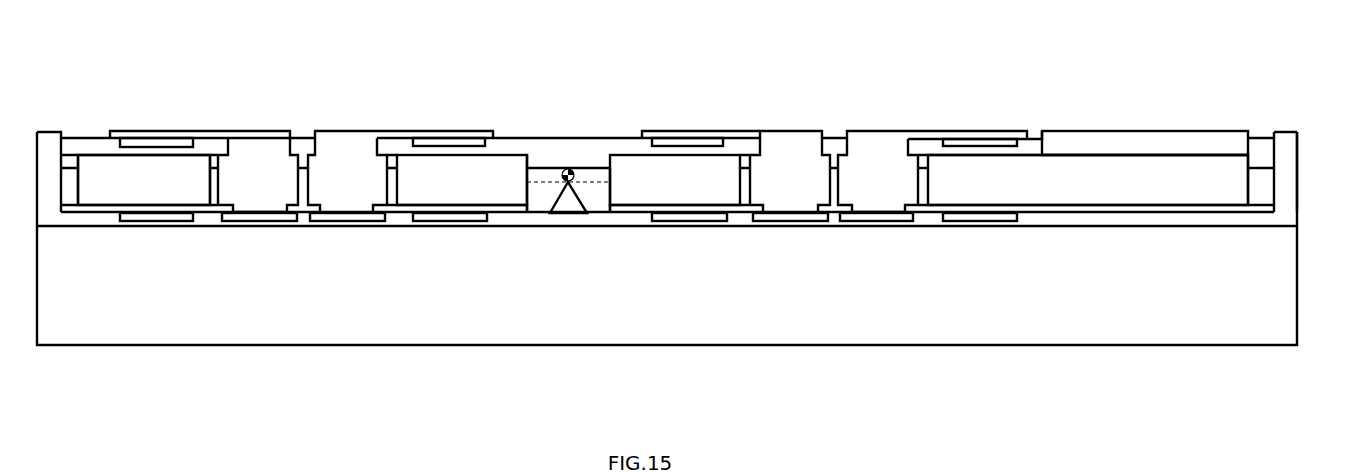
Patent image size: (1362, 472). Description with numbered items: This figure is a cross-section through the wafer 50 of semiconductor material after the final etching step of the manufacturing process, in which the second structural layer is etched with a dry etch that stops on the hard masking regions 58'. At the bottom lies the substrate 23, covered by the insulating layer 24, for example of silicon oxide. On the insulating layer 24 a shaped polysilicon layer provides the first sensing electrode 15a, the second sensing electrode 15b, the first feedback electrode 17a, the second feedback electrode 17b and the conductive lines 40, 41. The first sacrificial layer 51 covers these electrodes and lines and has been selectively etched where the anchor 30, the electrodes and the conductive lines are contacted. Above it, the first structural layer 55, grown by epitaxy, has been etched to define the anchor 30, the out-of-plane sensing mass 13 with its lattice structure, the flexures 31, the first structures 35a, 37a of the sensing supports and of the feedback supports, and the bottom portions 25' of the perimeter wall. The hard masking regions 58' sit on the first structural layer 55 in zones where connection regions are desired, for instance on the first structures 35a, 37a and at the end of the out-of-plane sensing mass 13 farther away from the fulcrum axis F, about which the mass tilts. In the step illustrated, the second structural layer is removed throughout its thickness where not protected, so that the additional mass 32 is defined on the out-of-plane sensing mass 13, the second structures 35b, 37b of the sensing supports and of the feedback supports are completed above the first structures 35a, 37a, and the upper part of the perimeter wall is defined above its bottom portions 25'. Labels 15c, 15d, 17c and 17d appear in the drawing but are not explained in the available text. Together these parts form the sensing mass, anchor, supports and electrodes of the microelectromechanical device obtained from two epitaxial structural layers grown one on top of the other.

The out-of-plane sensing mass 13 is at (112, 188).
The first sensing electrode 15a is at (163, 222).
The second sensing electrode 15b is at (968, 225).
The first package 15c is at (155, 138).
The second package 15d is at (968, 140).
The first feedback electrode 17a is at (428, 222).
The second feedback electrode 17b is at (693, 225).
The first device portion 17c is at (457, 170).
The second device portion 17d is at (690, 140).
The substrate 23 is at (487, 318).
The insulating layer 24 is at (1155, 222).
The bottom portions of the perimeter wall 25' is at (667, 264).
The anchor 30 is at (566, 218).
The flexures 31 is at (542, 178).
The additional mass 32 is at (1190, 142).
The first structures of the sensing supports 35a is at (257, 177).
The second structures of the sensing supports 35b is at (193, 133).
The first structures of the feedback supports 37a is at (350, 180).
The second structures of the feedback supports 37b is at (415, 135).
The conductive line 40 is at (275, 222).
The conductive line 41 is at (325, 222).
The wafer 50 is at (1130, 75).
The first sacrificial layer 51 is at (163, 203).
The first structural layer 55 is at (1312, 182).
The hard masking regions 58' is at (664, 134).
The fulcrum axis F is at (582, 160).